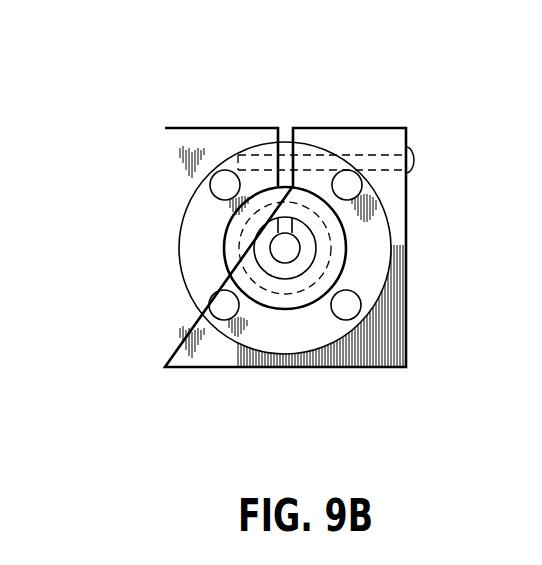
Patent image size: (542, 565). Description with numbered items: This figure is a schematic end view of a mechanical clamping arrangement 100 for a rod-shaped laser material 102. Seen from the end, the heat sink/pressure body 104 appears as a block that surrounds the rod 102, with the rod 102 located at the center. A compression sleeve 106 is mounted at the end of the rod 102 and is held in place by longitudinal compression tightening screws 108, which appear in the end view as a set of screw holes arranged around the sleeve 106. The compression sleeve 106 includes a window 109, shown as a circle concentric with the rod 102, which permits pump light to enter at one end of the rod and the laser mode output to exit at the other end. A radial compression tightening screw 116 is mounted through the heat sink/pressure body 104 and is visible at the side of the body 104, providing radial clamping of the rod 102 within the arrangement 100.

The mechanical clamping arrangement 100 is at (131, 121).
The rod-shaped laser material 102 is at (300, 249).
The heat sink/pressure body 104 is at (165, 192).
The compression sleeve 106 is at (382, 305).
The longitudinal compression tightening screw 108 is at (222, 178).
The window 109 is at (243, 257).
The radial compression tightening screw 116 is at (416, 158).